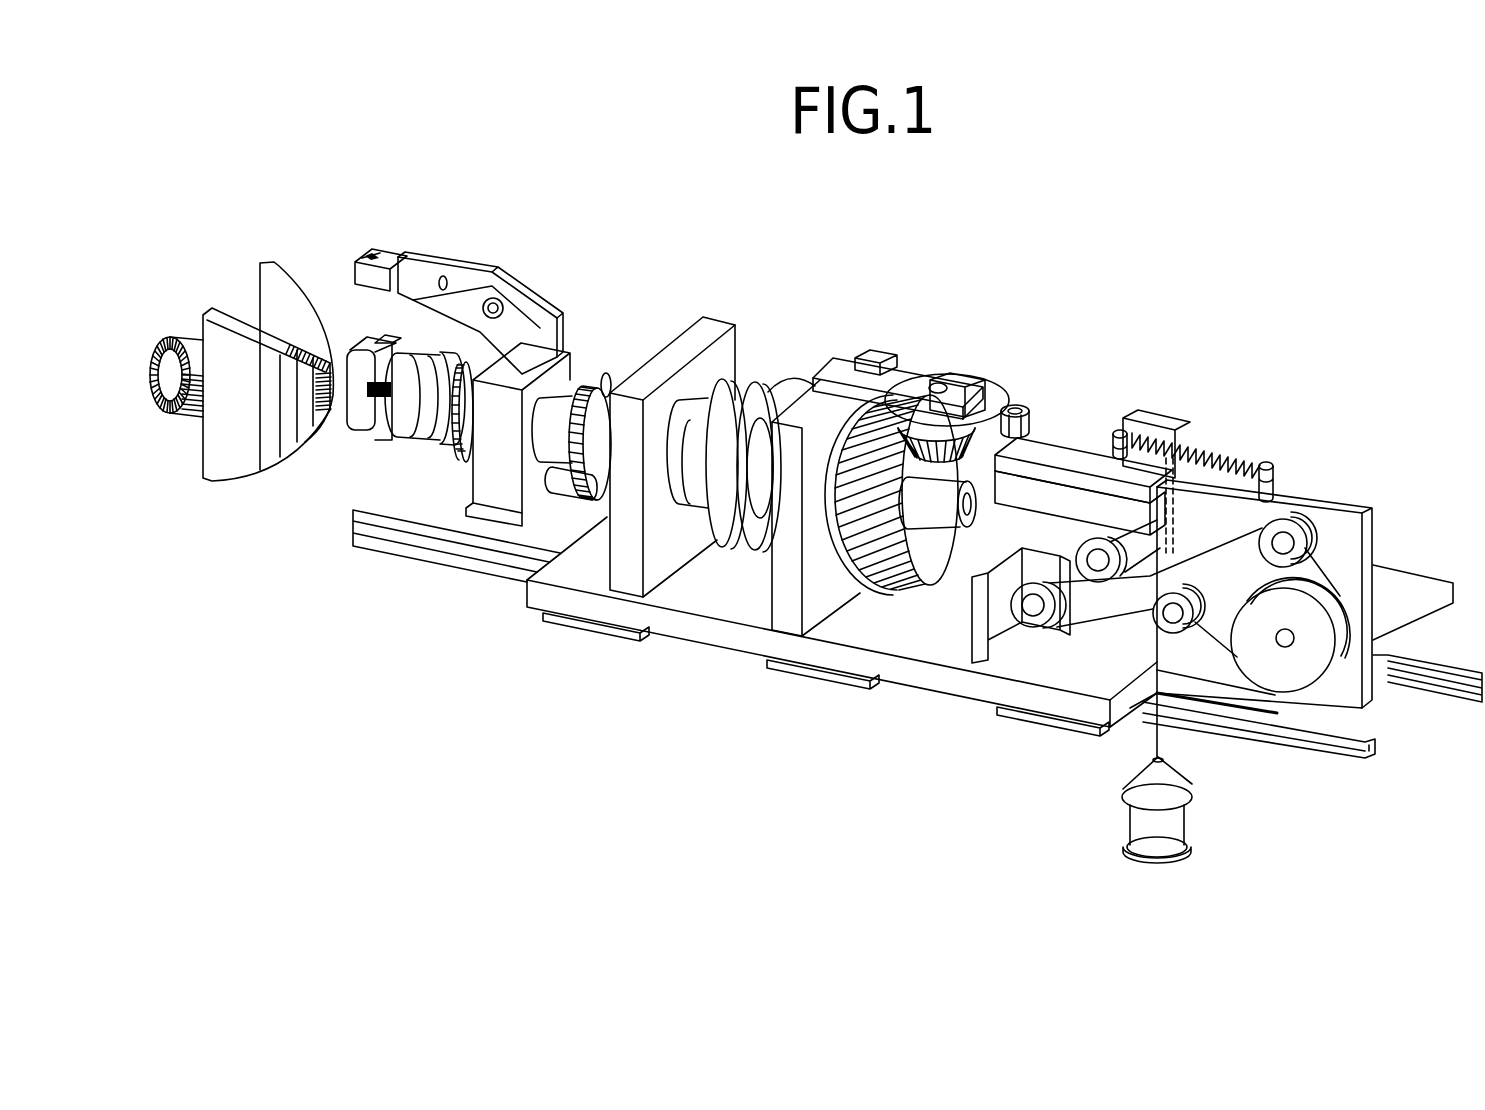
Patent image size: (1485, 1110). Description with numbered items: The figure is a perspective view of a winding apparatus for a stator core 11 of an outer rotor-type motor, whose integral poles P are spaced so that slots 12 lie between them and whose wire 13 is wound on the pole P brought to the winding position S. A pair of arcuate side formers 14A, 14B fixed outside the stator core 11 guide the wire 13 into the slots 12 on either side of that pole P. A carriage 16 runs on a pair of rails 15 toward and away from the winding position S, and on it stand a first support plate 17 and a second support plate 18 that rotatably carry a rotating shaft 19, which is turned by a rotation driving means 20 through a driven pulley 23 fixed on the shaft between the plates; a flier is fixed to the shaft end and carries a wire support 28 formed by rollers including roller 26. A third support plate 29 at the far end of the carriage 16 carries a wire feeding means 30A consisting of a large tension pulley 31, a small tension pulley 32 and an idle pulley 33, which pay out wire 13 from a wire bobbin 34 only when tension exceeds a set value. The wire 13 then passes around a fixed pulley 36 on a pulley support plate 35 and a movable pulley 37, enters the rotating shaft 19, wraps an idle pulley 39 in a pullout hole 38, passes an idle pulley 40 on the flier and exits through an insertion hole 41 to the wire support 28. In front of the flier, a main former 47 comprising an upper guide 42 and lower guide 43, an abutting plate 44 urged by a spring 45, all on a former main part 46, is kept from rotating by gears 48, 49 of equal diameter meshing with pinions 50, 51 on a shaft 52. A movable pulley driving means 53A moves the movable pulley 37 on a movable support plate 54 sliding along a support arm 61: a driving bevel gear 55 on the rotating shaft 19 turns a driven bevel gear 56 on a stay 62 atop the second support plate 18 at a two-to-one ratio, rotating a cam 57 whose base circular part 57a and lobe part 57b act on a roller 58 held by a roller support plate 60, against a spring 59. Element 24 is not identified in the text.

The stator core 11 is at (193, 350).
The slots 12 is at (300, 338).
The wire 13 is at (1000, 520).
The side former 14A is at (237, 463).
The side former 14B is at (273, 262).
The rails 15 is at (1285, 733).
The carriage 16 is at (925, 677).
The first support plate 17 is at (707, 330).
The second support plate 18 is at (873, 356).
The rotating shaft 19 is at (553, 440).
The rotation driving means 20 is at (753, 562).
The driven pulley 23 is at (715, 547).
The spindle 24 is at (770, 393).
The roller 26 is at (378, 250).
The wire support 28 is at (362, 254).
The third support plate 29 is at (1340, 527).
The wire feeding means 30A is at (1335, 588).
The tension pulley 31 is at (1270, 660).
The tension pulley 32 is at (1155, 608).
The idle pulley 33 is at (1288, 532).
The wire bobbin 34 is at (1123, 802).
The pulley support plate 35 is at (1000, 633).
The fixed pulley 36 is at (1045, 617).
The movable pulley 37 is at (1125, 565).
The pullout hole 38 is at (578, 385).
The idle pulley 39 is at (570, 396).
The idle pulley 40 is at (497, 300).
The insertion hole 41 is at (447, 278).
The upper guide 42 is at (360, 352).
The lower guide 43 is at (362, 428).
The abutting plate 44 is at (357, 340).
The spring 45 is at (420, 350).
The former main part 46 is at (432, 422).
The main former 47 is at (386, 455).
The gear 48 is at (527, 332).
The gear 49 is at (604, 372).
The pinion 50 is at (470, 470).
The pinion 51 is at (567, 483).
The shaft 52 is at (560, 483).
The movable pulley driving means 53A is at (975, 375).
The movable support plate 54 is at (1133, 505).
The driving bevel gear 55 is at (878, 578).
The driven bevel gear 56 is at (950, 457).
The cam 57 is at (993, 397).
The base circular part 57a is at (950, 378).
The lobe part 57b is at (1045, 437).
The roller 58 is at (1018, 406).
The spring 59 is at (1213, 448).
The roller support plate 60 is at (1118, 428).
The support arm 61 is at (1147, 415).
The stay 62 is at (893, 374).
The poles P is at (312, 425).
The winding position S is at (330, 428).